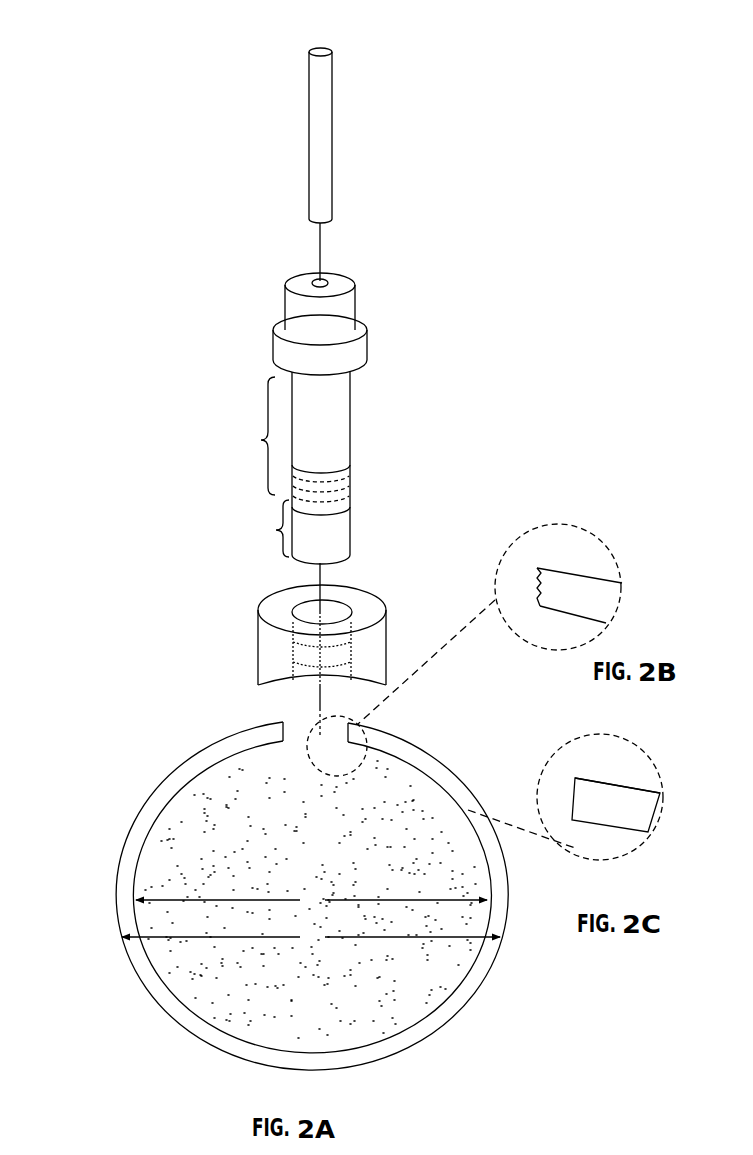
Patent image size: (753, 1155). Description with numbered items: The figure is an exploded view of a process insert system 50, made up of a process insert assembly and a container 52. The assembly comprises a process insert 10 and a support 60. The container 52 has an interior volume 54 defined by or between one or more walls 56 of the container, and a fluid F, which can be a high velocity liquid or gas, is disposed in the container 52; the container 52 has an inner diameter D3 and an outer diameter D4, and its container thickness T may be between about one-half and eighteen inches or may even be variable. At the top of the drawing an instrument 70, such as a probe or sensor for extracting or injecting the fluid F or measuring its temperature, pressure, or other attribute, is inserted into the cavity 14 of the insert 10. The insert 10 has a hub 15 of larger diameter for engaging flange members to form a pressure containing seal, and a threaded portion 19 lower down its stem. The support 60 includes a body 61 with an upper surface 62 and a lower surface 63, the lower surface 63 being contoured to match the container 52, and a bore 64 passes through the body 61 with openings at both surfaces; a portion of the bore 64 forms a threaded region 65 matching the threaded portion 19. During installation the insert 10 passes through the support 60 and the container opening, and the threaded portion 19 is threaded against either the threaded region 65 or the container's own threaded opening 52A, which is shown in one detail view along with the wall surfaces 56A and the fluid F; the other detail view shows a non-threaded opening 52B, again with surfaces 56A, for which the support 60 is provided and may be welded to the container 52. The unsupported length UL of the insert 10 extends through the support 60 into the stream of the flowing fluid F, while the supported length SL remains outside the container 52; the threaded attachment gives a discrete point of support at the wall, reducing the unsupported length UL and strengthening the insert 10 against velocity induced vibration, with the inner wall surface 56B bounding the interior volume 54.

In FIG. 2A, the process insert system 50 is at (131, 92).
In FIG. 2A, the instrument 70 is at (281, 123).
In FIG. 2A, the cavity 14 is at (302, 275).
In FIG. 2A, the process insert 10 is at (275, 428).
In FIG. 2A, the hub 15 is at (372, 337).
In FIG. 2A, the threaded portion 19 is at (352, 490).
In FIG. 2A, the supported length SL is at (257, 436).
In FIG. 2A, the unsupported length UL is at (271, 528).
In FIG. 2A, the support 60 is at (293, 640).
In FIG. 2A, the body 61 is at (258, 666).
In FIG. 2A, the upper surface 62 is at (361, 606).
In FIG. 2A, the lower surface 63 is at (283, 683).
In FIG. 2A, the bore 64 is at (303, 613).
In FIG. 2A, the threaded region 65 is at (346, 660).
In FIG. 2A, the container 52 is at (275, 896).
In FIG. 2B, the container 52 is at (577, 547).
In FIG. 2C, the container 52 is at (616, 790).
In FIG. 2B, the threaded opening 52A is at (530, 585).
In FIG. 2C, the non-threaded opening 52B is at (568, 797).
In FIG. 2A, the interior volume 54 is at (271, 899).
In FIG. 2A, the walls 56 is at (275, 896).
In FIG. 2A, the outer wall surface 56A is at (122, 934).
In FIG. 2B, the outer wall surface 56A is at (565, 568).
In FIG. 2C, the outer wall surface 56A is at (628, 782).
In FIG. 2A, the inner wall surface 56B is at (150, 970).
In FIG. 2A, the fluid F is at (310, 899).
In FIG. 2B, the fluid F is at (551, 627).
In FIG. 2C, the fluid F is at (593, 837).
In FIG. 2A, the inner diameter D3 is at (311, 902).
In FIG. 2A, the outer diameter D4 is at (311, 939).
In FIG. 2A, the container thickness T is at (420, 983).